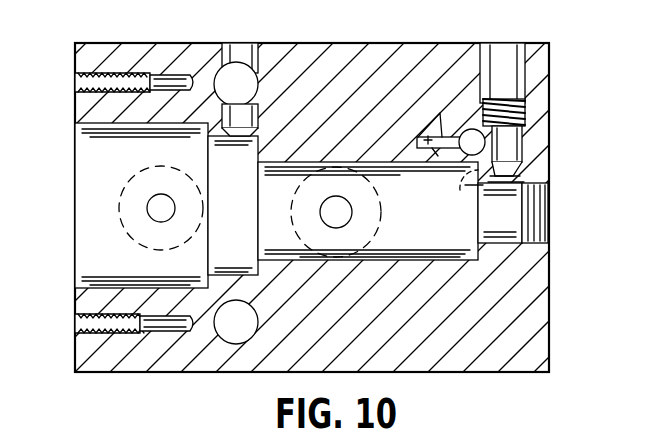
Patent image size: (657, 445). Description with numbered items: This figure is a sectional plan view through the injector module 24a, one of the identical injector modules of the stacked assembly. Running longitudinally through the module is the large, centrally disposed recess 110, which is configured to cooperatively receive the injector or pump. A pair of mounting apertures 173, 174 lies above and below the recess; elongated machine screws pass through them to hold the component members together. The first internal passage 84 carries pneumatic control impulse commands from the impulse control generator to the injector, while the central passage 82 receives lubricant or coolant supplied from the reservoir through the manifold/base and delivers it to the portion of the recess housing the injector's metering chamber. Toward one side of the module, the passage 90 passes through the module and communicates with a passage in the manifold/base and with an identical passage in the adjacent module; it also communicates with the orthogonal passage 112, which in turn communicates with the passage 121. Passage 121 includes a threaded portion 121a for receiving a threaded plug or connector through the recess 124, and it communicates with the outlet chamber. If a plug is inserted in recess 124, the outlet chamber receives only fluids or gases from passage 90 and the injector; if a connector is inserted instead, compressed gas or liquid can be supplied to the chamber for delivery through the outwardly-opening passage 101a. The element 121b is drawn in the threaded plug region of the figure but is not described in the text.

The injector module 24a is at (586, 52).
The central recess 110 is at (67, 218).
The first internal passage 84 is at (145, 200).
The central passage 82 is at (340, 222).
The mounting aperture 173 is at (228, 78).
The mounting aperture 174 is at (232, 335).
The recess 124 is at (478, 66).
The passage 121 is at (524, 96).
The threaded portion 121a is at (526, 120).
The plug seat 121b is at (540, 170).
The outwardly-opening passage 101a is at (524, 180).
The orthogonal passage 112 is at (435, 136).
The passage 90 is at (468, 168).